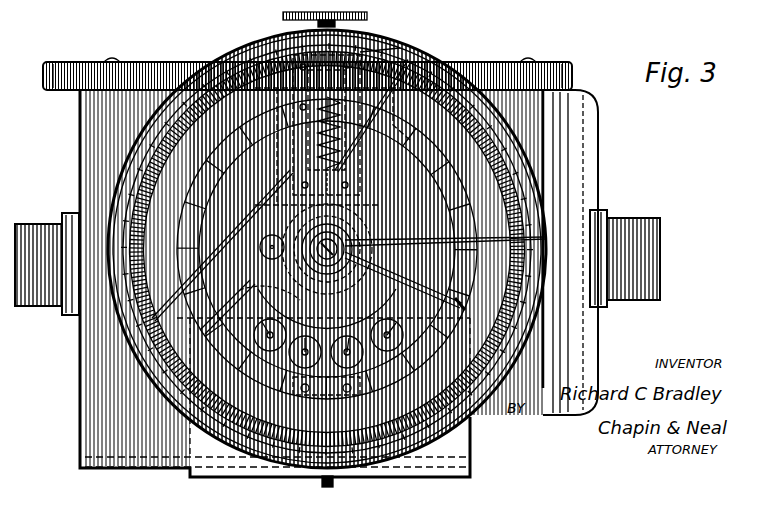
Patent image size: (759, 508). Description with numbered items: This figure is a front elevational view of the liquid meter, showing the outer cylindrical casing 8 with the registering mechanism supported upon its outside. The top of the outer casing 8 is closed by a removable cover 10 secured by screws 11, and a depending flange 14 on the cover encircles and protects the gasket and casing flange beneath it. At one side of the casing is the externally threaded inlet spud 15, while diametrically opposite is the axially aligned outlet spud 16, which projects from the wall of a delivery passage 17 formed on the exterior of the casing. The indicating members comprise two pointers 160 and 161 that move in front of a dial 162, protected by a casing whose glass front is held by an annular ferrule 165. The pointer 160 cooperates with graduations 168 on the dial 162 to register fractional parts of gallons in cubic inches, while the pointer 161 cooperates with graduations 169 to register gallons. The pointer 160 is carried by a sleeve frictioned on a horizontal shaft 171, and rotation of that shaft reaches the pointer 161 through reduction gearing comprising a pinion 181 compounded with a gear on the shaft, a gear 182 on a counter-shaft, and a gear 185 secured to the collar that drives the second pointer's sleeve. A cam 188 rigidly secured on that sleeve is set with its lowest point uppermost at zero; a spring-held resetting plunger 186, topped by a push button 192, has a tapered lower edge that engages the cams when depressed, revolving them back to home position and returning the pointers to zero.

The outer cylindrical casing 8 is at (90, 395).
The removable cover 10 is at (190, 57).
The screws 11 is at (112, 61).
The depending flange 14 is at (56, 91).
The inlet spud 15 is at (28, 220).
The outlet spud 16 is at (665, 239).
The delivery passage 17 is at (588, 173).
The pointer 160 is at (408, 245).
The pointer 161 is at (280, 186).
The dial 162 is at (463, 284).
The annular ferrule 165 is at (262, 55).
The graduations 168 is at (366, 51).
The graduations 169 is at (500, 158).
The horizontal shaft 171 is at (270, 285).
The pinion 181 is at (227, 307).
The gear 182 is at (252, 196).
The gear 185 is at (284, 226).
The plunger 186 is at (366, 184).
The cam 188 is at (385, 175).
The push button 192 is at (312, 16).